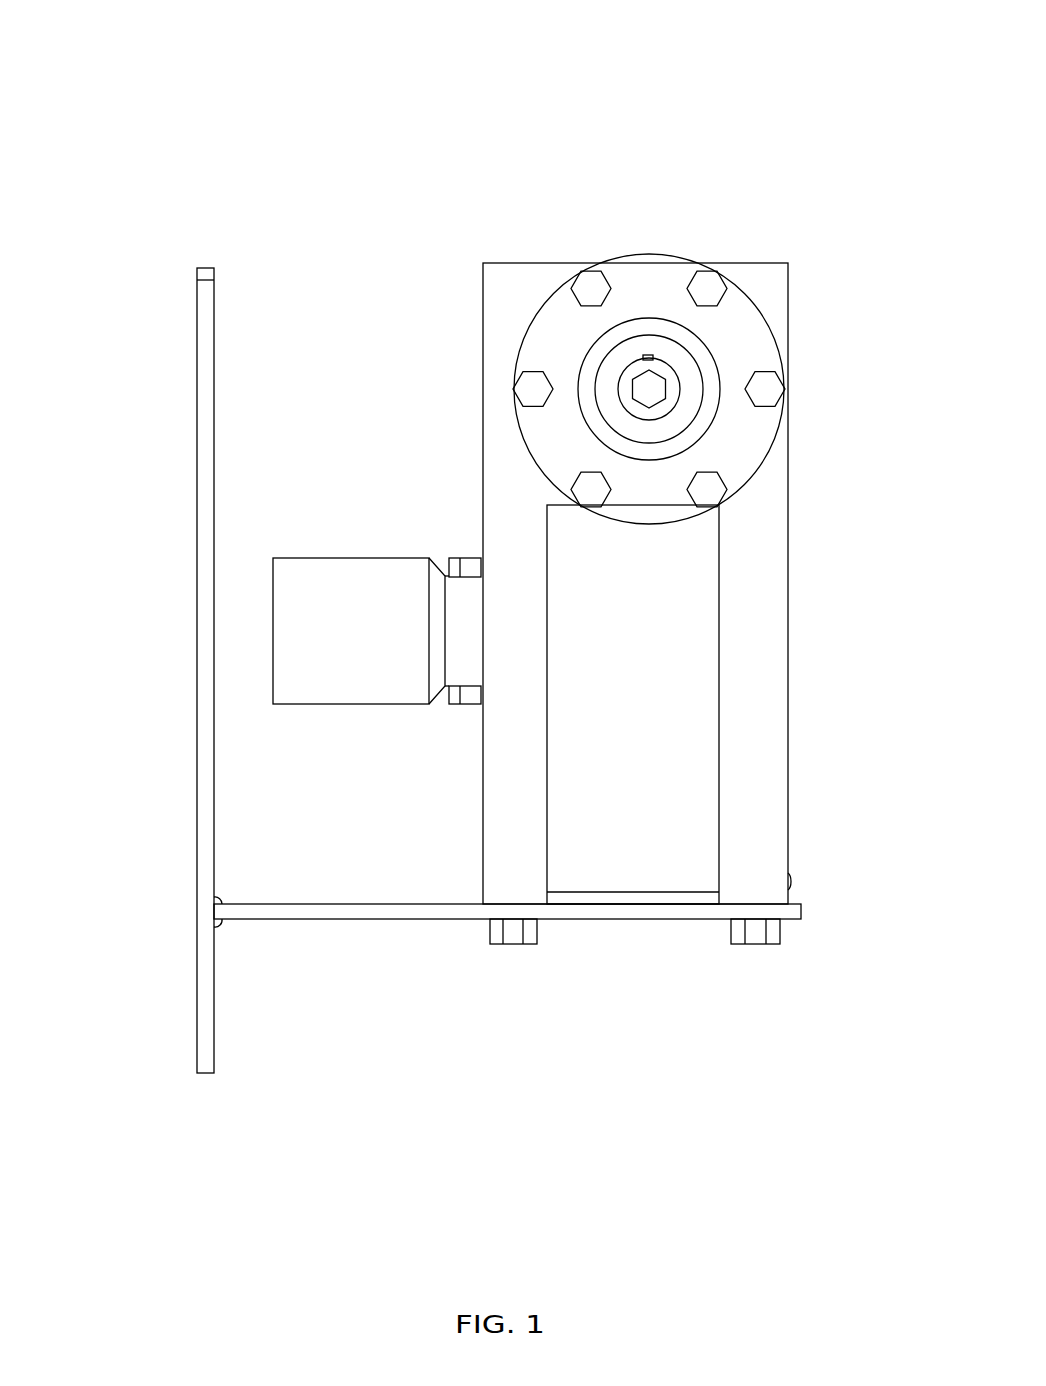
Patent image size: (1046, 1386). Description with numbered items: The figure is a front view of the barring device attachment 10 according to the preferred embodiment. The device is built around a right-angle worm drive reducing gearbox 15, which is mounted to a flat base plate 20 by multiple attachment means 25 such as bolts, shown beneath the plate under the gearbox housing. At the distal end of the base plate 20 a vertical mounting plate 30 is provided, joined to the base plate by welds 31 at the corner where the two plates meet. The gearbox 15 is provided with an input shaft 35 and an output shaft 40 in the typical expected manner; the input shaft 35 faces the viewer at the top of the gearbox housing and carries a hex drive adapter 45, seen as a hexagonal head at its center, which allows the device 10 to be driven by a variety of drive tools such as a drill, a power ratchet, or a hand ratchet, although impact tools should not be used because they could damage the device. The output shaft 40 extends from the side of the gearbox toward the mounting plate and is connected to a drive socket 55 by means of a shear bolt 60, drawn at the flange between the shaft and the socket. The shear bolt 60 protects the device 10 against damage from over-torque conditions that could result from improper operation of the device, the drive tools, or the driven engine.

The barring device attachment 10 is at (124, 168).
The right-angle worm drive reducing gearbox 15 is at (768, 565).
The base plate 20 is at (403, 913).
The attachment means 25 is at (507, 937).
The mounting plate 30 is at (205, 433).
The welds 31 is at (215, 899).
The input shaft 35 is at (653, 358).
The output shaft 40 is at (452, 608).
The hex drive adapter 45 is at (643, 383).
The drive socket 55 is at (325, 582).
The shear bolt 60 is at (454, 560).